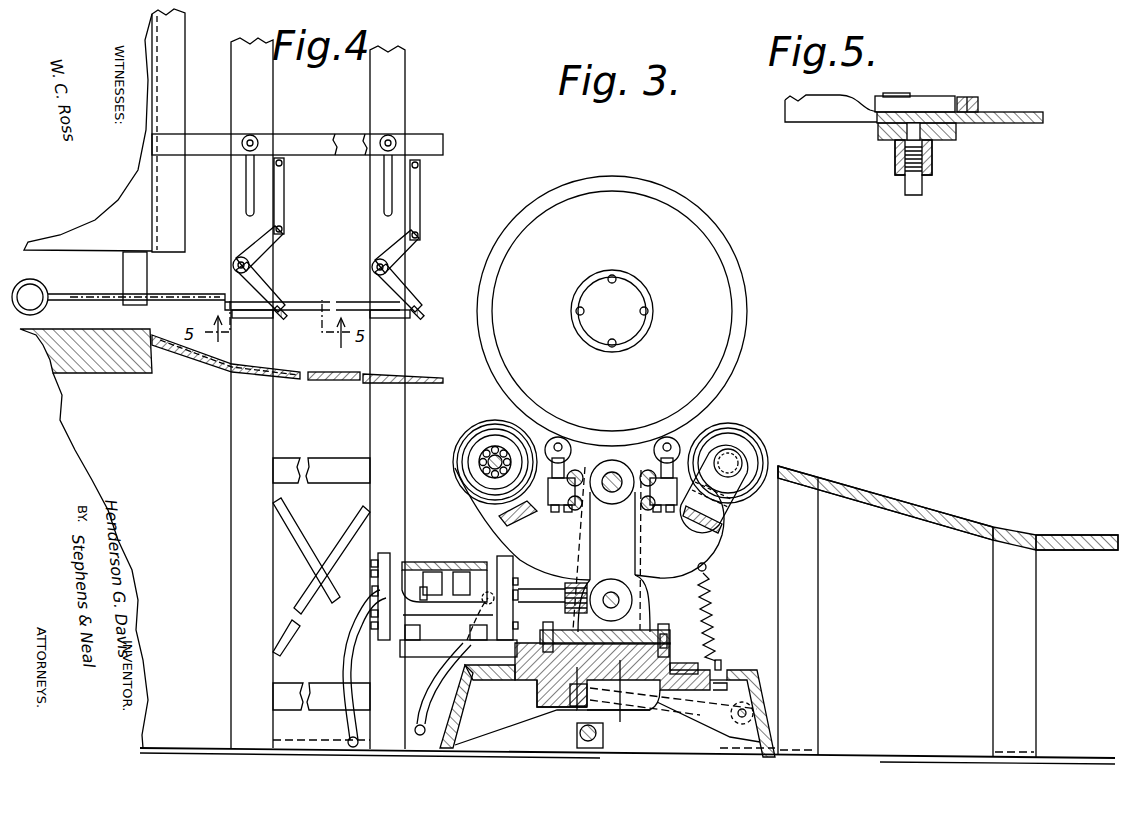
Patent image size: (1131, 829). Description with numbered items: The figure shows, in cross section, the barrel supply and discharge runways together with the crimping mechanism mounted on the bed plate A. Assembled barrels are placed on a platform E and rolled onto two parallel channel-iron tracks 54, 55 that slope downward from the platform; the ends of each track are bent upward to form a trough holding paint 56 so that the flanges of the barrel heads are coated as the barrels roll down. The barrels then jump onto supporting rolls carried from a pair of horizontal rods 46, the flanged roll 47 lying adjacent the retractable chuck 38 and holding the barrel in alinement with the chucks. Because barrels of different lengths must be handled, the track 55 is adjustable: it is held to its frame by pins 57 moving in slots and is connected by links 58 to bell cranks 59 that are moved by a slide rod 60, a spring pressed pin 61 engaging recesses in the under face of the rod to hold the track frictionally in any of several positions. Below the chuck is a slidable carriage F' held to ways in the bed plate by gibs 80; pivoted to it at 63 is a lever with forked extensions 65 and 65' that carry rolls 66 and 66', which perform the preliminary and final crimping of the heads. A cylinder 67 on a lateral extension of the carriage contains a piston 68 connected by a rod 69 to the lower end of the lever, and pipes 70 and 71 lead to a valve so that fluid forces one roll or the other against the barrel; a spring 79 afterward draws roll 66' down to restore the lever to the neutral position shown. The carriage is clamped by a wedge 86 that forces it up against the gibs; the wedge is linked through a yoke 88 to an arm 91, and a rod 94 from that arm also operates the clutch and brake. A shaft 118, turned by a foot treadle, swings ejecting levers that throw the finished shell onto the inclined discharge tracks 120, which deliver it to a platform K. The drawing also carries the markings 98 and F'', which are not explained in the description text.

In FIG. 3, the chuck 38 is at (748, 318).
In FIG. 3, the rods 46 is at (642, 470).
In FIG. 3, the flanged roll 47 is at (664, 437).
In FIG. 4, the track 54 is at (428, 383).
In FIG. 3, the track 54 is at (589, 549).
In FIG. 4, the track 55 is at (443, 147).
In FIG. 4, the paint 56 is at (405, 378).
In FIG. 4, the pins 57 is at (256, 136).
In FIG. 4, the links 58 is at (421, 200).
In FIG. 4, the bell cranks 59 is at (385, 258).
In FIG. 5, the bell cranks 59 is at (935, 106).
In FIG. 4, the slide rod 60 is at (352, 300).
In FIG. 5, the slide rod 60 is at (1020, 125).
In FIG. 5, the spring pressed pin 61 is at (918, 198).
In FIG. 3, the pivot 63 is at (611, 505).
In FIG. 3, the forked extension 65 is at (494, 515).
In FIG. 3, the forked extension 65' is at (724, 489).
In FIG. 3, the roll 66 is at (478, 462).
In FIG. 3, the roll 66' is at (749, 463).
In FIG. 3, the cylinder 67 is at (433, 562).
In FIG. 3, the piston 68 is at (447, 580).
In FIG. 3, the rod 69 is at (543, 597).
In FIG. 3, the pipe 70 is at (420, 736).
In FIG. 3, the pipe 71 is at (352, 748).
In FIG. 3, the spring 79 is at (722, 598).
In FIG. 3, the gibs 80 is at (686, 663).
In FIG. 3, the wedge 86 is at (562, 708).
In FIG. 3, the yoke 88 is at (572, 712).
In FIG. 3, the arm 91 is at (605, 745).
In FIG. 3, the rod 94 is at (589, 750).
In FIG. 3, the set screw 98 is at (572, 510).
In FIG. 3, the shaft 118 is at (755, 714).
In FIG. 3, the tracks 120 is at (915, 510).
In FIG. 3, the bed plate A is at (730, 668).
In FIG. 4, the platform E is at (52, 413).
In FIG. 3, the platform K is at (1070, 537).
In FIG. 3, the slidable bracket or carriage F' is at (666, 610).
In FIG. 3, the frame part F'' is at (626, 734).